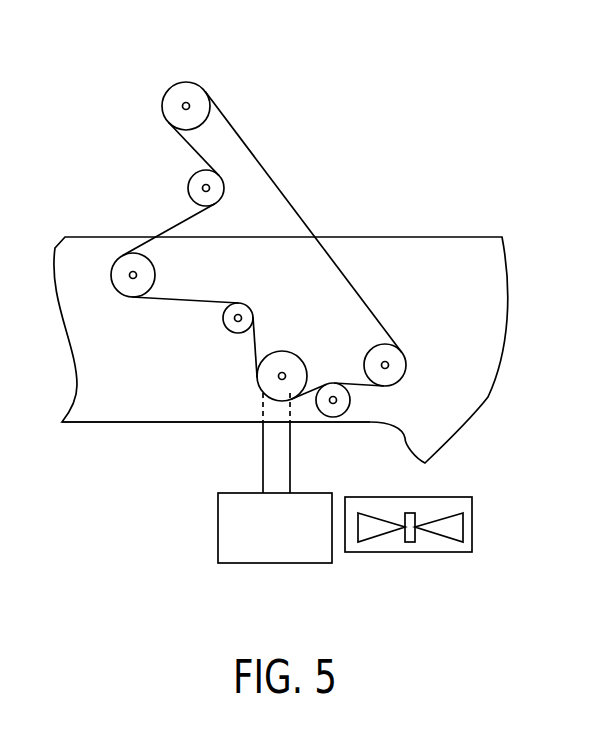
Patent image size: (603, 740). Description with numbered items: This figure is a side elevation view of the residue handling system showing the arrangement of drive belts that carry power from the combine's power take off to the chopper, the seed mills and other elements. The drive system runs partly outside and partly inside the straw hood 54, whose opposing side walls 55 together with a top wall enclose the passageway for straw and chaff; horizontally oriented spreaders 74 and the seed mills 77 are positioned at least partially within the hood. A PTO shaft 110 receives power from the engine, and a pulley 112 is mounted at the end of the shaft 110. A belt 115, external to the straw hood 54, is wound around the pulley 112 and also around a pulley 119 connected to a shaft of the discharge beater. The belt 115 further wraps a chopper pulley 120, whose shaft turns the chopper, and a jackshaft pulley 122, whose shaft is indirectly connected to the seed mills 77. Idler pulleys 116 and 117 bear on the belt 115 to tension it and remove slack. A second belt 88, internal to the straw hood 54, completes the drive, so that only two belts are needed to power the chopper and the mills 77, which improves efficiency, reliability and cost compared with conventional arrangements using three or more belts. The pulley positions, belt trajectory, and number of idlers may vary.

The straw hood 54 is at (508, 292).
The side wall 55 is at (97, 398).
The spreader 74 is at (473, 525).
The seed mill 77 is at (273, 547).
The belt 88 is at (273, 465).
The PTO shaft 110 is at (195, 95).
The pulley 112 is at (178, 93).
The belt 115 is at (262, 165).
The idler pulley 116 is at (200, 184).
The idler pulley 117 is at (335, 412).
The pulley 119 is at (115, 275).
The chopper pulley 120 is at (397, 350).
The jackshaft pulley 122 is at (280, 363).